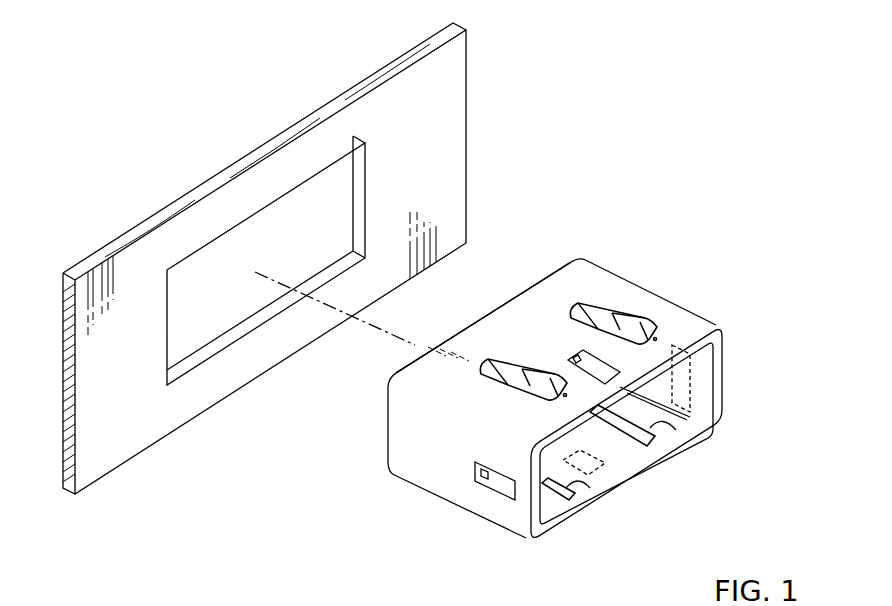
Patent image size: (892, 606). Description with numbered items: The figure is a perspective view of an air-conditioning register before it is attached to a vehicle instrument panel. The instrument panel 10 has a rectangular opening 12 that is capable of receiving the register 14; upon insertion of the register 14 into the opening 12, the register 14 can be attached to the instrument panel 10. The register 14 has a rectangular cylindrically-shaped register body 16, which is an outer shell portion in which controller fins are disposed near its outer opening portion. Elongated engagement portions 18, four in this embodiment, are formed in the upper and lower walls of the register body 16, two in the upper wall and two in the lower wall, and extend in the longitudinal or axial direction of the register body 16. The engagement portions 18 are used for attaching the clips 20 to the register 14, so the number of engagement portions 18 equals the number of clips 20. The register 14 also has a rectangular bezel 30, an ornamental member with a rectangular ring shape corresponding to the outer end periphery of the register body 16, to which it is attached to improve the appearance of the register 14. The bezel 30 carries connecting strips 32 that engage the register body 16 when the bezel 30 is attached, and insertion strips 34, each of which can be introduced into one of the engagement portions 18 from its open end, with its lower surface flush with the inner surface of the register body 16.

The instrument panel 10 is at (449, 86).
The opening 12 is at (215, 330).
The register 14 is at (635, 286).
The register body 16 is at (530, 305).
The engagement portions 18 is at (585, 300).
The clips 20 is at (645, 330).
The bezel 30 is at (725, 374).
The connecting strips 32 is at (596, 365).
The insertion strips 34 is at (548, 503).